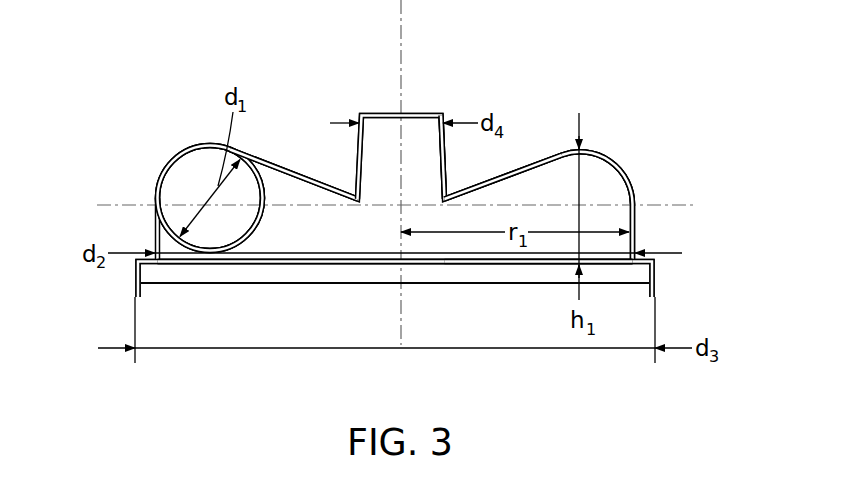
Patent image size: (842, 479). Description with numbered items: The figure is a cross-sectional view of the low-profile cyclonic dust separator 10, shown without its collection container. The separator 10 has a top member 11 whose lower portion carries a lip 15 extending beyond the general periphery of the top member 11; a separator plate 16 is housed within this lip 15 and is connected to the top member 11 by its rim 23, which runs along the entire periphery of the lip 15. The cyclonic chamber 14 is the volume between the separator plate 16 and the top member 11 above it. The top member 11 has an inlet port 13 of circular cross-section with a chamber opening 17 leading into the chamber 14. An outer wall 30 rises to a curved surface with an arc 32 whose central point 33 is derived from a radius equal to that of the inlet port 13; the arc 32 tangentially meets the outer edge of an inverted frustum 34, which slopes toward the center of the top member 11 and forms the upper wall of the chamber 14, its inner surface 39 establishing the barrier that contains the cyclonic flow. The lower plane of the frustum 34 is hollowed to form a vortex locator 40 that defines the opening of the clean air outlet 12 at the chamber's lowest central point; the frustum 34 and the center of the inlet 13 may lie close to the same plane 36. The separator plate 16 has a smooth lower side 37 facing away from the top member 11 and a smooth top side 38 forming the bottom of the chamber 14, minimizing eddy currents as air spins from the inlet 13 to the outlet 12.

The dust separator 10 is at (205, 64).
The top member 11 is at (296, 172).
The outlet 12 is at (408, 106).
The inlet port 13 is at (160, 178).
The cyclonic chamber 14 is at (487, 237).
The lip 15 is at (655, 278).
The separator plate 16 is at (235, 273).
The chamber opening 17 is at (200, 180).
The rim 23 is at (392, 247).
The outer wall 30 is at (648, 220).
The arc 32 is at (592, 149).
The central point 33 is at (598, 182).
The inverted frustum 34 is at (512, 166).
The plane 36 is at (291, 212).
The lower side 37 is at (465, 285).
The top side 38 is at (350, 266).
The inner surface 39 is at (553, 158).
The vortex locator 40 is at (445, 203).